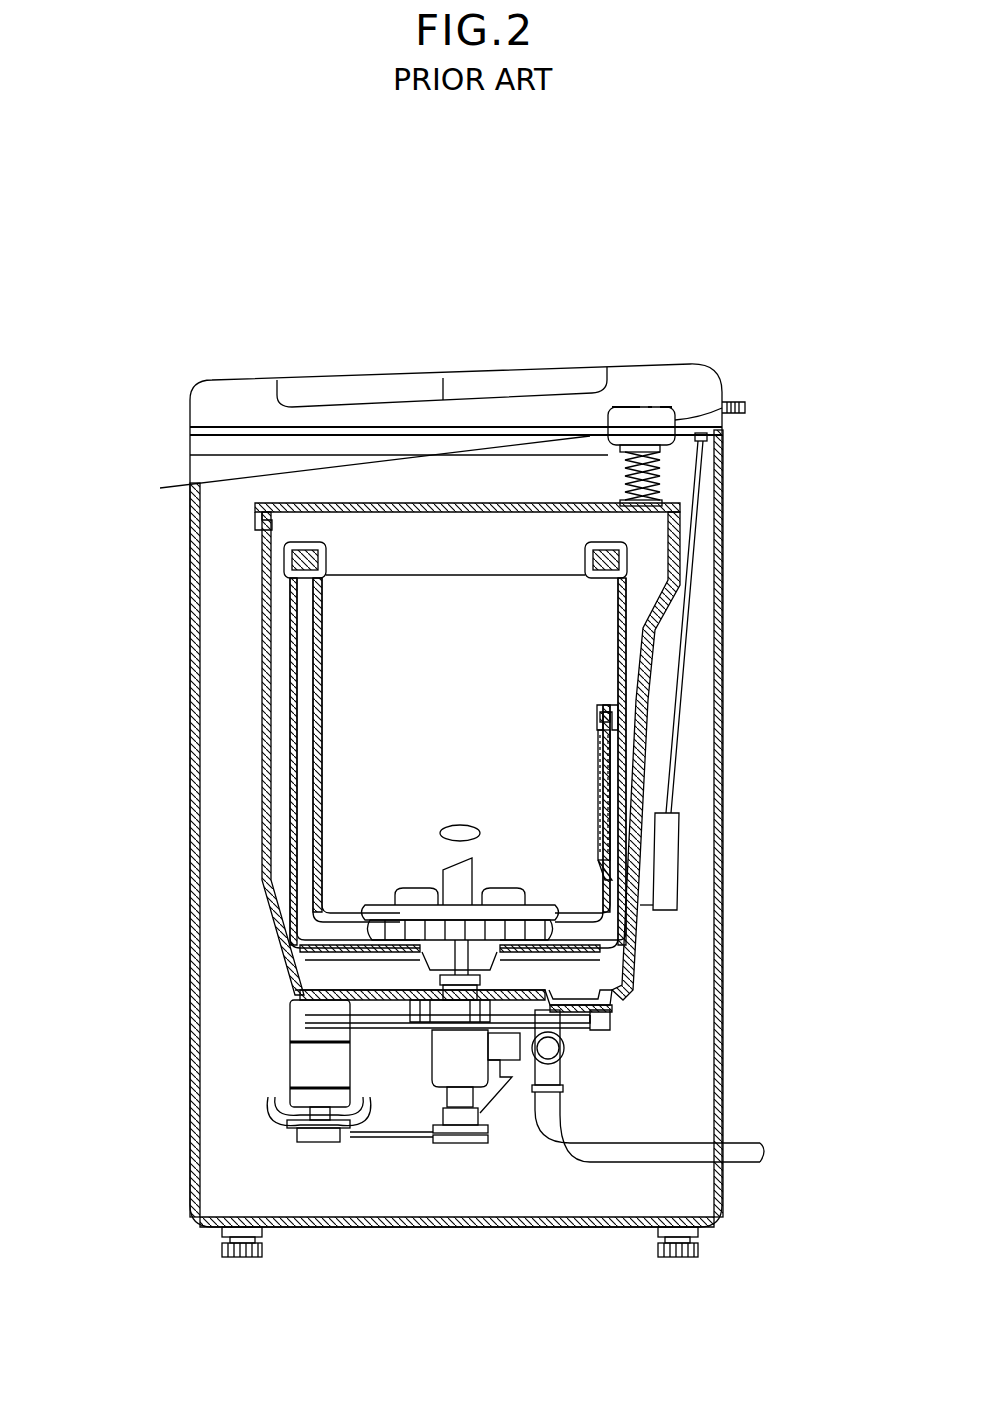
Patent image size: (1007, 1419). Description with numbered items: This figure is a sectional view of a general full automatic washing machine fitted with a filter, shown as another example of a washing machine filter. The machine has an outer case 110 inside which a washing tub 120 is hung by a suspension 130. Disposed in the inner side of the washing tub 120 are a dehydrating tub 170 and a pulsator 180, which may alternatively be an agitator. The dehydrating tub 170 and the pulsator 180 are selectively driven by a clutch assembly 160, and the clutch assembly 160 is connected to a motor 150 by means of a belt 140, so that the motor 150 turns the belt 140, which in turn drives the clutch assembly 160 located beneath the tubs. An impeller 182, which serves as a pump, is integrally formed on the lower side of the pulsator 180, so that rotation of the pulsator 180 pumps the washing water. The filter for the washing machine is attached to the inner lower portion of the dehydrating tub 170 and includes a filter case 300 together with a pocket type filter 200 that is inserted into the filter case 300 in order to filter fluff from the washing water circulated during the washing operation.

The case 110 is at (725, 470).
The suspension 130 is at (700, 572).
The washing tub 120 is at (650, 638).
The dehydrating tub 170 is at (627, 687).
The pocket type filter 200 is at (598, 710).
The filter case 300 is at (598, 808).
The pulsator 180 is at (405, 905).
The impeller 182 is at (388, 967).
The motor 150 is at (292, 1072).
The belt 140 is at (380, 1136).
The clutch assembly 160 is at (452, 1080).